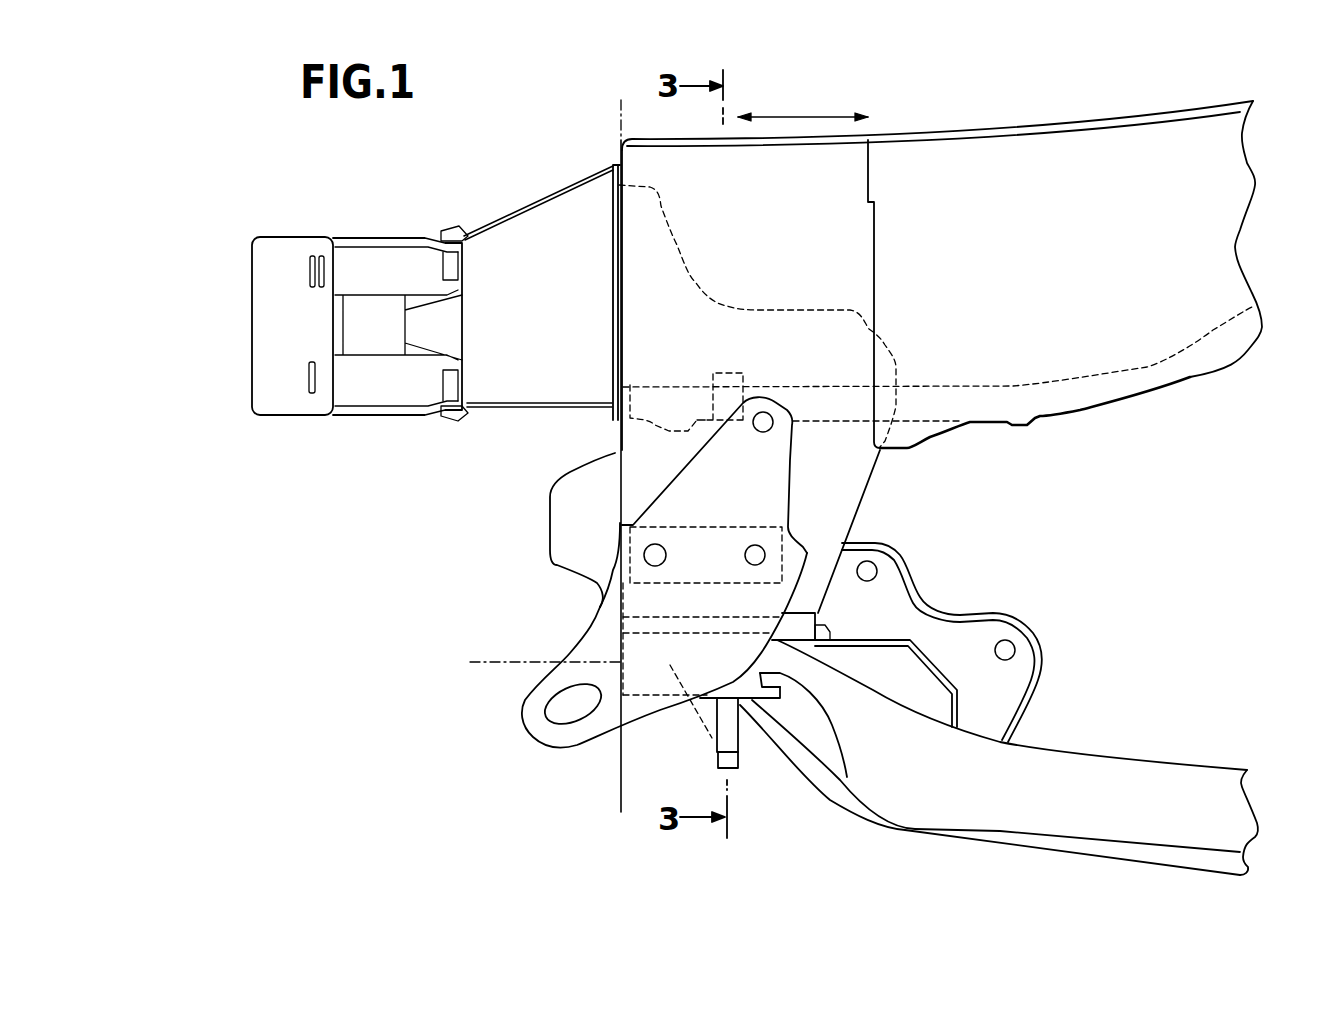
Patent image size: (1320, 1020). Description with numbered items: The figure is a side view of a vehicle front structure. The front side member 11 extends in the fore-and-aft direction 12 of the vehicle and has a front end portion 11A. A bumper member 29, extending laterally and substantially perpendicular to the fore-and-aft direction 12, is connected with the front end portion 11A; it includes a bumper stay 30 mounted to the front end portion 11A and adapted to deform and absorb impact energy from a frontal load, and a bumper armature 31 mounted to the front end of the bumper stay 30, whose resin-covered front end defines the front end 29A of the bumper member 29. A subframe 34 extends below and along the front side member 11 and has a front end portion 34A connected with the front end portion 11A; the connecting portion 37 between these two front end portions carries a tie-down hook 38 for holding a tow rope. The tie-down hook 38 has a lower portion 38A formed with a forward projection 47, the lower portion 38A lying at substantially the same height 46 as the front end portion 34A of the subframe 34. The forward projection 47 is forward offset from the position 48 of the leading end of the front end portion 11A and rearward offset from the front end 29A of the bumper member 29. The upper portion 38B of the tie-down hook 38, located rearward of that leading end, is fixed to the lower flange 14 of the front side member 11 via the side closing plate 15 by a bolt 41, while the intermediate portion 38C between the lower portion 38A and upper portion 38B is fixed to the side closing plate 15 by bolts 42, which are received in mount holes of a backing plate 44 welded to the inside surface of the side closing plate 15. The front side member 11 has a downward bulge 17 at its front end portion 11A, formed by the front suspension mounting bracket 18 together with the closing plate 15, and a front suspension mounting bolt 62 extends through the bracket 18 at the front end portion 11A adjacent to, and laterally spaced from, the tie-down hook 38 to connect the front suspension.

The front side member 11 is at (940, 263).
The front end portion 11A is at (643, 291).
The fore-and-aft direction 12 is at (806, 115).
The lower flange 14 is at (1153, 373).
The side closing plate 15 is at (840, 518).
The downward bulge 17 is at (872, 495).
The front suspension mounting bracket 18 is at (892, 345).
The bumper member 29 is at (399, 274).
The front end of bumper member 29A is at (252, 257).
The bumper stay 30 is at (522, 293).
The bumper armature 31 is at (379, 235).
The subframe 34 is at (979, 757).
The front end portion of subframe 34A is at (740, 770).
The connecting portion 37 is at (520, 530).
The tie-down hook 38 is at (700, 580).
The lower portion of tie-down hook 38A is at (543, 678).
The upper portion of tie-down hook 38B is at (733, 450).
The intermediate portion of tie-down hook 38C is at (697, 547).
The bolt 41 is at (777, 427).
The bolts 42 is at (667, 558).
The backing plate 44 is at (643, 583).
The height 46 is at (477, 660).
The forward projection 47 is at (533, 723).
The position of leading end of front end portion 48 is at (621, 797).
The front suspension mounting bolt 62 is at (745, 720).